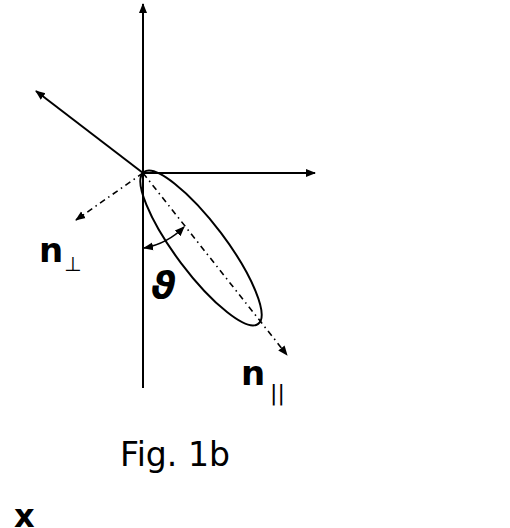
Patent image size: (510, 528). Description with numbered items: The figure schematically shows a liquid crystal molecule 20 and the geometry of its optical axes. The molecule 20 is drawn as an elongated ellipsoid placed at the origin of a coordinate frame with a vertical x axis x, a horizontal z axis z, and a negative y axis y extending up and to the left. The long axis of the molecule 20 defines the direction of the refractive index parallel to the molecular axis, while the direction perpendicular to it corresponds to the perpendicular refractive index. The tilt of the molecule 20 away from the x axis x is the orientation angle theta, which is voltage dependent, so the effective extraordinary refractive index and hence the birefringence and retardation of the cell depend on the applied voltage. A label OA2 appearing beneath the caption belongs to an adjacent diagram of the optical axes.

The LC molecule 20 is at (209, 216).
The x axis x is at (126, 194).
The negative y axis y is at (77, 132).
The z axis (optical axis direction) z is at (229, 153).
The optical axis 2 label OA2 is at (114, 506).